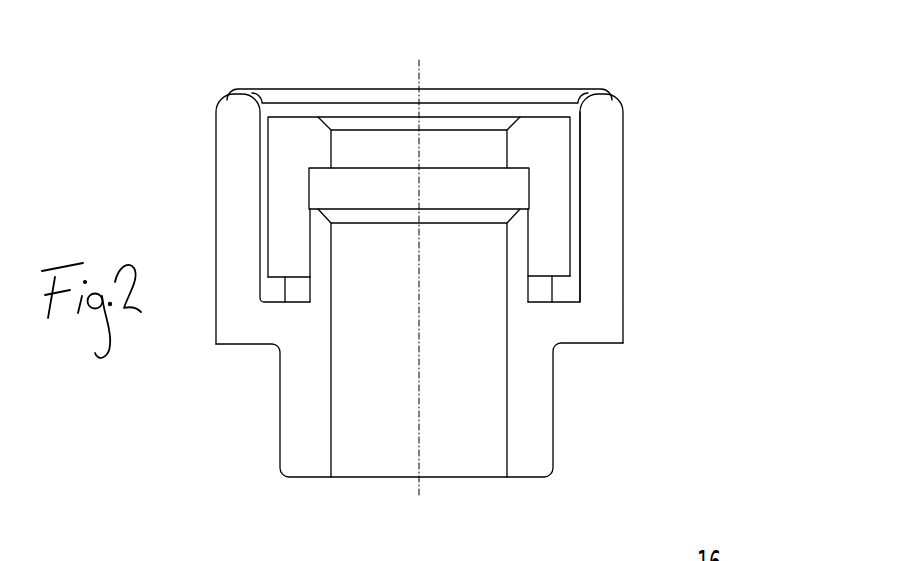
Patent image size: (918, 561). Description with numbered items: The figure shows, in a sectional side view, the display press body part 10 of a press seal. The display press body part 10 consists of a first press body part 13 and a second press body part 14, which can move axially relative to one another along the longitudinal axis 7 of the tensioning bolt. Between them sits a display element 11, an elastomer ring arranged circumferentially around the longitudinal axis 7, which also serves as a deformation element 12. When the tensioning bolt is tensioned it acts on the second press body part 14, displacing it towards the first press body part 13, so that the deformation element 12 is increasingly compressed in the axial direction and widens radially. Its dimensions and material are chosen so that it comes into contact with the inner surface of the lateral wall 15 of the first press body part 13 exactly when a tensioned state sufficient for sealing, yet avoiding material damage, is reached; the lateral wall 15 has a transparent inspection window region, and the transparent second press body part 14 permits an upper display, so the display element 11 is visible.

The longitudinal axis 7 is at (419, 68).
The display press body part 10 is at (643, 85).
The display element 11 is at (511, 308).
The deformation element 12 is at (537, 292).
The first press body part 13 is at (532, 400).
The second press body part 14 is at (549, 197).
The lateral wall 15 is at (600, 260).